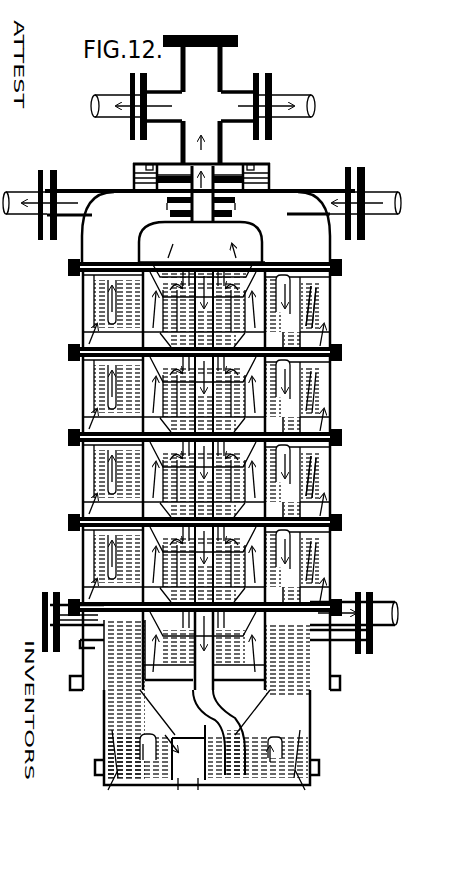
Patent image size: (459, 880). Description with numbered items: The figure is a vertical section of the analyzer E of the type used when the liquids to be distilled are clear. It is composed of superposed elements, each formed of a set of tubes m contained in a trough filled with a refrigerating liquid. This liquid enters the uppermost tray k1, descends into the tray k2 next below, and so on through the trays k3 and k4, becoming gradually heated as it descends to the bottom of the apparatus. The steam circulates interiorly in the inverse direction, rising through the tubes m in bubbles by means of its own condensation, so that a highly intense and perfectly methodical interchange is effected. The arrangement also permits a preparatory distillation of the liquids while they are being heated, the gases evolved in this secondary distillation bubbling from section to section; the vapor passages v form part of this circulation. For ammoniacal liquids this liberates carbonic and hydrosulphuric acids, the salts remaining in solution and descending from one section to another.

The tubes m is at (153, 302).
The uppermost tray k1 is at (88, 315).
The tray next below k2 is at (93, 380).
The tray k3 is at (90, 450).
The tray k4 is at (95, 542).
The vapor tubes v is at (292, 325).
The analyzer E is at (222, 615).